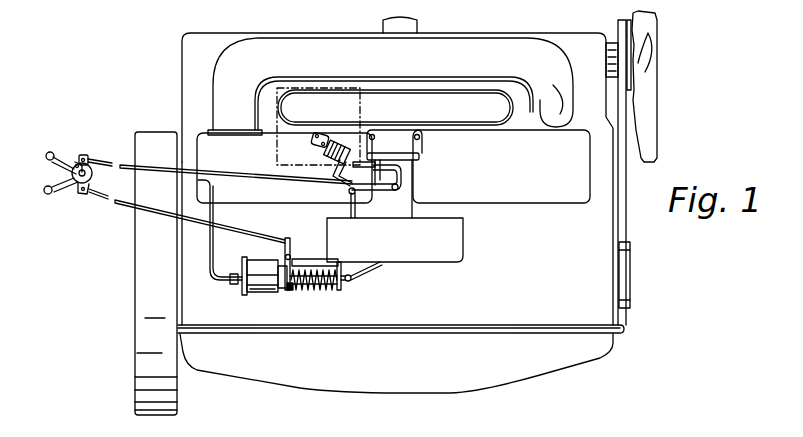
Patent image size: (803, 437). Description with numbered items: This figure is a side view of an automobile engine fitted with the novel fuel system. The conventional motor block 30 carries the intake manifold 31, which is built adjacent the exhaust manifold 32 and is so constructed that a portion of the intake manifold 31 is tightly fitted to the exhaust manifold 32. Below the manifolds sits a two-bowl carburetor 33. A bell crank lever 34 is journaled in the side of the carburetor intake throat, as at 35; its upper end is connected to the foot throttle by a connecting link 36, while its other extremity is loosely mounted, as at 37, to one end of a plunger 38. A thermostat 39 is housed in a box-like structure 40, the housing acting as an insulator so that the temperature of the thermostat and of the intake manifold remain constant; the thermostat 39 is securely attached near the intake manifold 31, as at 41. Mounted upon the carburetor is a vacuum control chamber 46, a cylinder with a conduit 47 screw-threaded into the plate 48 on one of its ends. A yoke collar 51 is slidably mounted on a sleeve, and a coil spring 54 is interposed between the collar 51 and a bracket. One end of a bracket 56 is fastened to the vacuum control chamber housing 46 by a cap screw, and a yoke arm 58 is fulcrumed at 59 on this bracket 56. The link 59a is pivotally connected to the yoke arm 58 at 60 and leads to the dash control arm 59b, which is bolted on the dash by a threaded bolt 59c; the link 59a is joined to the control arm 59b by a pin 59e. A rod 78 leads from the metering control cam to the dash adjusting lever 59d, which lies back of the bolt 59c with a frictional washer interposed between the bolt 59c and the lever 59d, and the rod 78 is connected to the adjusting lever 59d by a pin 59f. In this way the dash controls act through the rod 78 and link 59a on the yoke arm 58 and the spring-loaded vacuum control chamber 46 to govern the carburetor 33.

The motor block 30 is at (417, 202).
The intake manifold 31 is at (395, 107).
The exhaust manifold 32 is at (390, 76).
The two-bowl carburetor 33 is at (432, 258).
The bell crank lever 34 is at (398, 180).
The journal 35 is at (398, 190).
The connecting link 36 is at (378, 160).
The loose mounting 37 is at (355, 197).
The plunger 38 is at (353, 216).
The thermostat 39 is at (325, 160).
The box-like structure 40 is at (277, 152).
The attachment point 41 is at (312, 141).
The vacuum control chamber 46 is at (262, 296).
The conduit 47 is at (215, 281).
The plate 48 is at (243, 263).
The yoke collar 51 is at (291, 291).
The coil spring 54 is at (318, 290).
The bracket 56 is at (310, 262).
The yoke arm 58 is at (295, 252).
The fulcrum 59 is at (285, 256).
The link 59a is at (222, 229).
The dash control arm 59b is at (90, 177).
The threaded bolt 59c is at (80, 165).
The dash adjusting lever 59d is at (50, 153).
The pin 59e is at (82, 196).
The pin 59f is at (88, 158).
The pivot connection 60 is at (287, 238).
The rod 78 is at (205, 180).